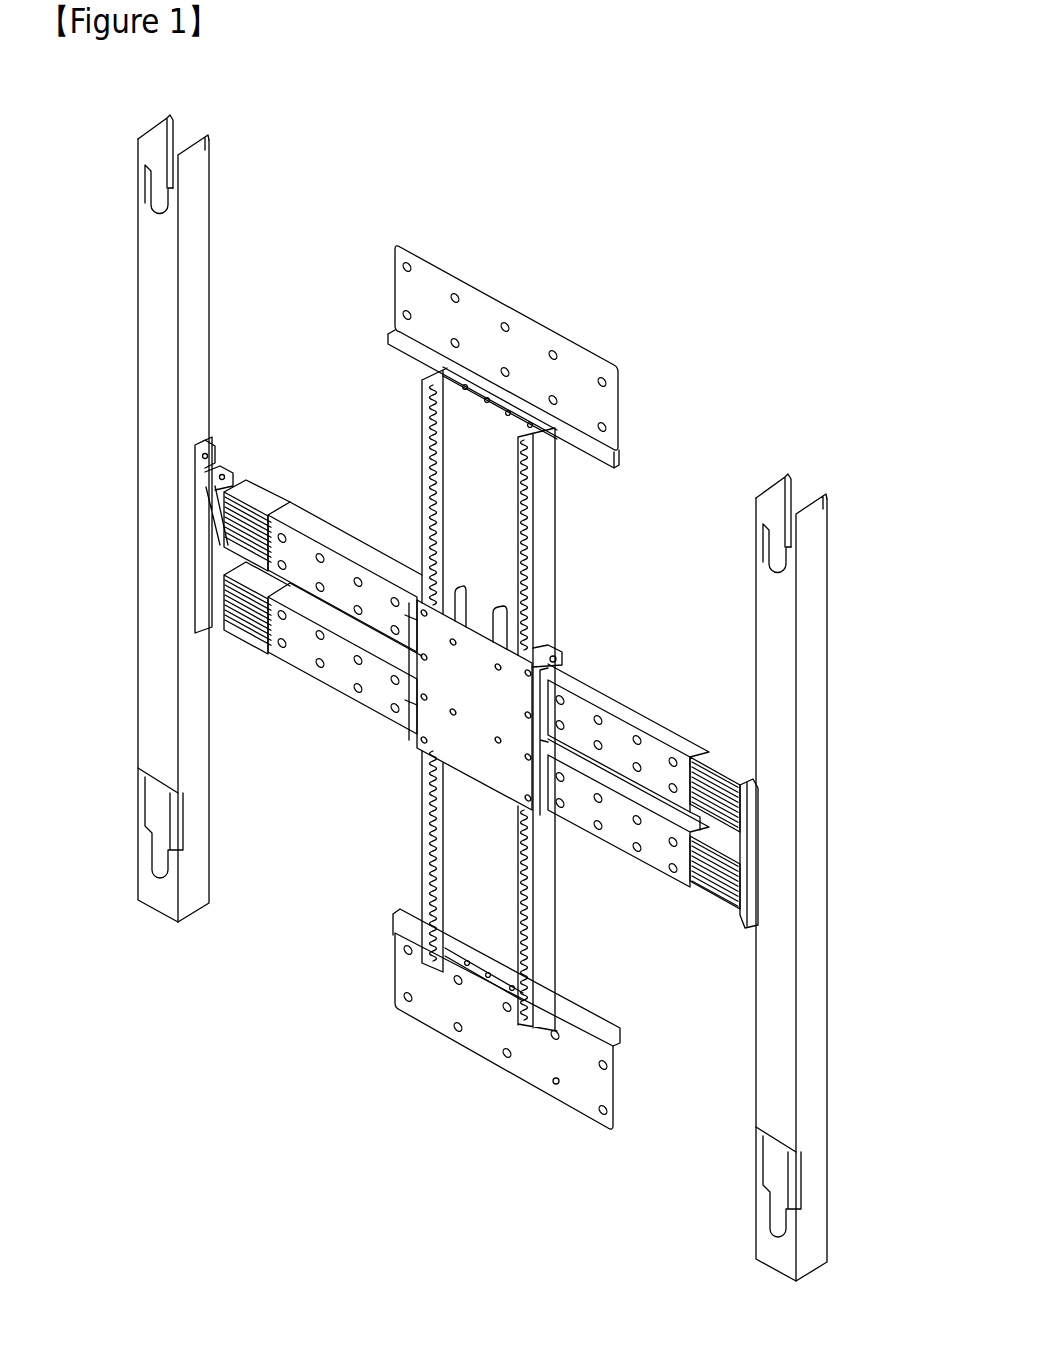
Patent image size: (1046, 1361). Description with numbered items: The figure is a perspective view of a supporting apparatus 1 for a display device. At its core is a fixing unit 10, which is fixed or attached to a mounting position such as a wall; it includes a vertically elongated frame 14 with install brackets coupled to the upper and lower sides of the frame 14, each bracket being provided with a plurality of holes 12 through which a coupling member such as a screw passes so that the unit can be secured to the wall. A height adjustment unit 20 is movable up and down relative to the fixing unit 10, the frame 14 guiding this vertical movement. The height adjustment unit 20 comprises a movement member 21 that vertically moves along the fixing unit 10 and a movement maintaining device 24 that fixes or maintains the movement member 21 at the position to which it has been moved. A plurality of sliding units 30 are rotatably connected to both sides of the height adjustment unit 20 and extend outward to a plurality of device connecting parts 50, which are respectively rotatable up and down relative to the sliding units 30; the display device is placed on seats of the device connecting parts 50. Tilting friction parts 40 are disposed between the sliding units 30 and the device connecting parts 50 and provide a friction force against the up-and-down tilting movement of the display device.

The supporting apparatus 1 is at (537, 211).
The fixing unit 10 is at (469, 698).
The hole 12 is at (552, 1084).
The frame 14 is at (550, 510).
The height adjustment unit 20 is at (462, 697).
The movement member 21 is at (468, 766).
The movement maintaining device 24 is at (511, 613).
The sliding unit 30 is at (641, 684).
The tilting friction part 40 is at (242, 450).
The device connecting part 50 is at (134, 312).